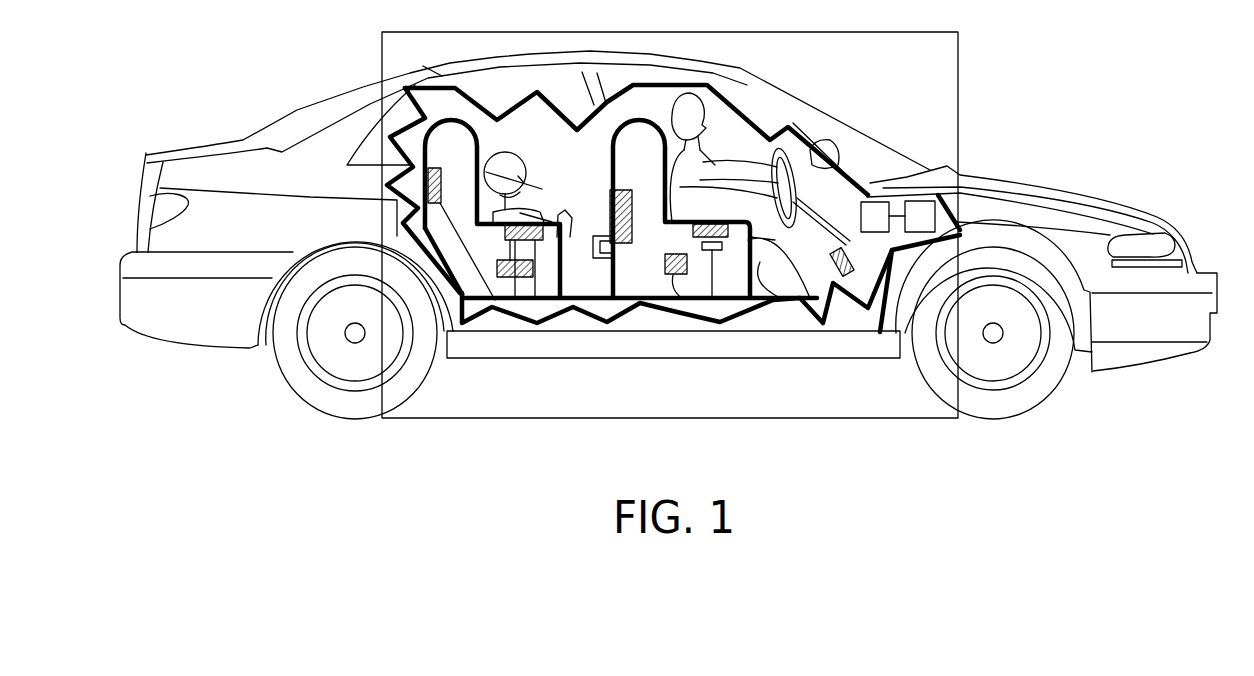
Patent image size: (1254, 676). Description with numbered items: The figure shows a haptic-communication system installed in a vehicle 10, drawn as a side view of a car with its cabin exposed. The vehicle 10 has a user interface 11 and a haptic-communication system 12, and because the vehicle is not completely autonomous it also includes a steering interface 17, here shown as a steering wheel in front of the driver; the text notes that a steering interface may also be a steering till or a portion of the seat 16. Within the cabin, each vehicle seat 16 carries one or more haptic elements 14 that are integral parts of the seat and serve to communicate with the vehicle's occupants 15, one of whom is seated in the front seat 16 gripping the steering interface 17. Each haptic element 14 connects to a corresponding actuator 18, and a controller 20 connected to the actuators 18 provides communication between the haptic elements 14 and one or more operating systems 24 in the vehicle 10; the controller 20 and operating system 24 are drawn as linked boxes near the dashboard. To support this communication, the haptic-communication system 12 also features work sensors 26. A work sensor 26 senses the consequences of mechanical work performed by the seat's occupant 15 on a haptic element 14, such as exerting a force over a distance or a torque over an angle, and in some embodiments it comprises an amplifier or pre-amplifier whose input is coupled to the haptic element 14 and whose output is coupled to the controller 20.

The vehicle 10 is at (253, 237).
The user interface 11 is at (832, 257).
The haptic-communication system 12 is at (484, 405).
The haptic element 14 is at (610, 200).
The occupant 15 is at (707, 163).
The vehicle seat 16 is at (653, 285).
The steering interface 17 is at (833, 218).
The actuator 18 is at (597, 237).
The controller 20 is at (883, 217).
The operating system 24 is at (920, 216).
The work sensor 26 is at (662, 256).